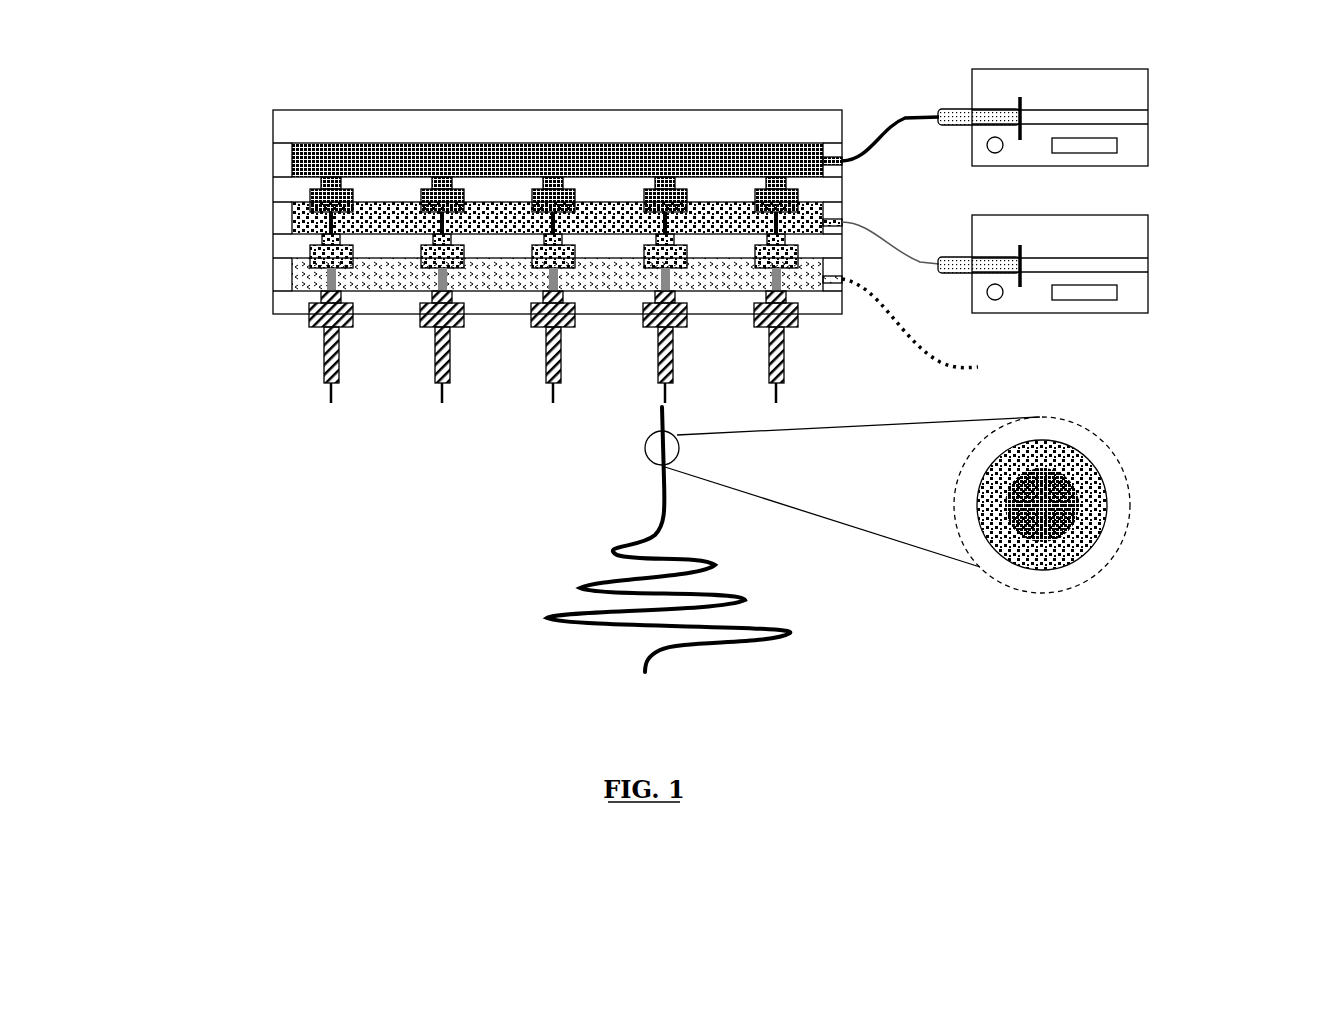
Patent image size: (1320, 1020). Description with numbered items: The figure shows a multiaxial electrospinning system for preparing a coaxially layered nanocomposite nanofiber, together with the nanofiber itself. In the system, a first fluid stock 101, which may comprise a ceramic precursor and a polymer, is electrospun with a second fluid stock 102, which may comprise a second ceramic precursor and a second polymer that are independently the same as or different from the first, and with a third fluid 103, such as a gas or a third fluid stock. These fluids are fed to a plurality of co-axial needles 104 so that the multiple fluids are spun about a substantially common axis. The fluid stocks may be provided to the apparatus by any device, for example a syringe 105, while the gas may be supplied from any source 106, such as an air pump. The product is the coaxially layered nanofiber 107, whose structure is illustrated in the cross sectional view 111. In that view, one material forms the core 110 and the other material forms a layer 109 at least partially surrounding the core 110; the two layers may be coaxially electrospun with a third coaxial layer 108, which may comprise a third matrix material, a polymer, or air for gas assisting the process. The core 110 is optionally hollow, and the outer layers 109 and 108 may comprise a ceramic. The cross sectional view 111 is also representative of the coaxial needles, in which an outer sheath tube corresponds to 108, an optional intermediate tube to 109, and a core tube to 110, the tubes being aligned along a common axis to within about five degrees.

The first fluid stock 101 is at (310, 156).
The second fluid stock 102 is at (302, 225).
The third fluid 103 is at (302, 273).
The co-axial needles 104 is at (530, 389).
The syringe 105 is at (1133, 150).
The gas source 106 is at (939, 323).
The coaxially layered nanofiber 107 is at (807, 636).
The third coaxial layer 108 is at (1116, 507).
The intermediate layer 109 is at (1088, 550).
The core 110 is at (1046, 527).
The cross sectional view 111 is at (1117, 527).